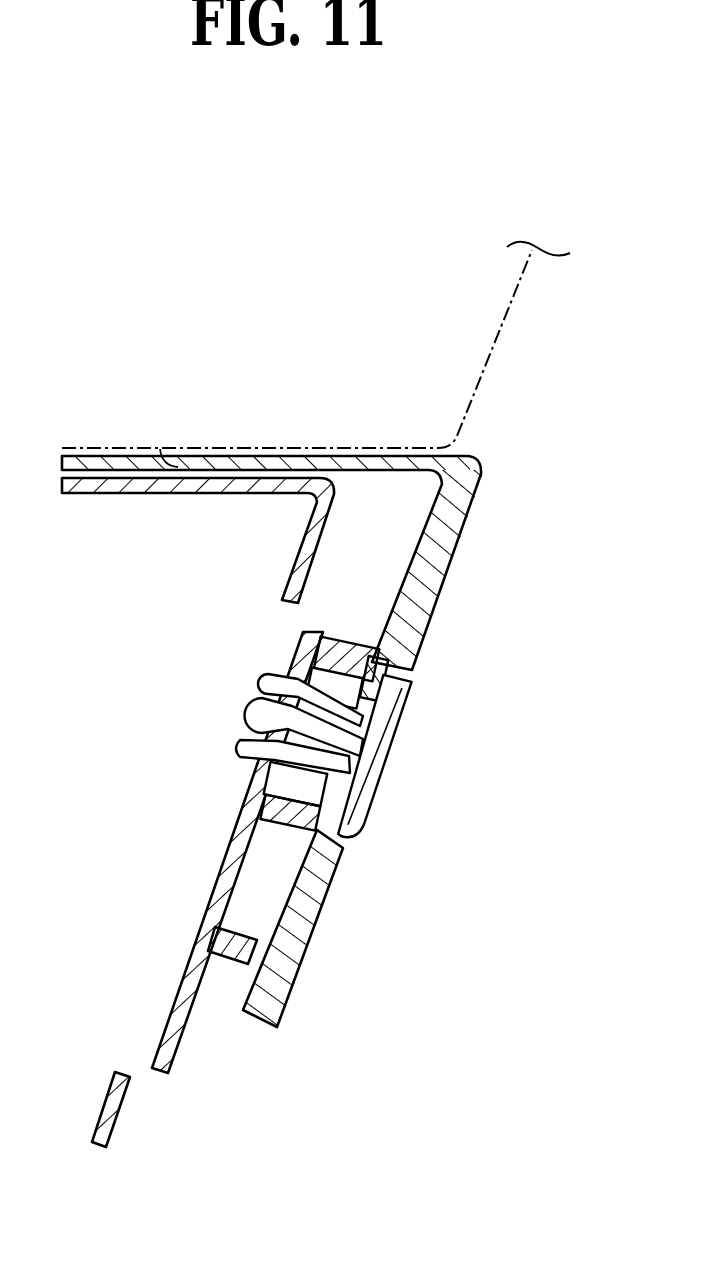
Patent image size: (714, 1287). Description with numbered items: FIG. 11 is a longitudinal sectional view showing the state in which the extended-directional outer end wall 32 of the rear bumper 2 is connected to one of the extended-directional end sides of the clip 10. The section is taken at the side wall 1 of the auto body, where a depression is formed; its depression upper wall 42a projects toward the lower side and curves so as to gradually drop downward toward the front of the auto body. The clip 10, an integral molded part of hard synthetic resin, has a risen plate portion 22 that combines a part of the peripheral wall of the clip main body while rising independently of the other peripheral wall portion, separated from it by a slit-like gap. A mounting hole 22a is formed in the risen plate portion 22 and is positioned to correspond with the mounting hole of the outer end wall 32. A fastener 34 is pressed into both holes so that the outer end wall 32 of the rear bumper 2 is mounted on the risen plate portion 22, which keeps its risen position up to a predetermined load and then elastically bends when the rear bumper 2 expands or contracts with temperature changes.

The side wall 1 is at (462, 350).
The rear bumper 2 is at (473, 482).
The clip 10 is at (315, 582).
The risen plate portion 22 is at (230, 868).
The mounting hole 22a is at (242, 745).
The extended-directional outer end wall 32 is at (303, 912).
The fastener 34 is at (373, 749).
The depression upper wall 42a is at (188, 454).